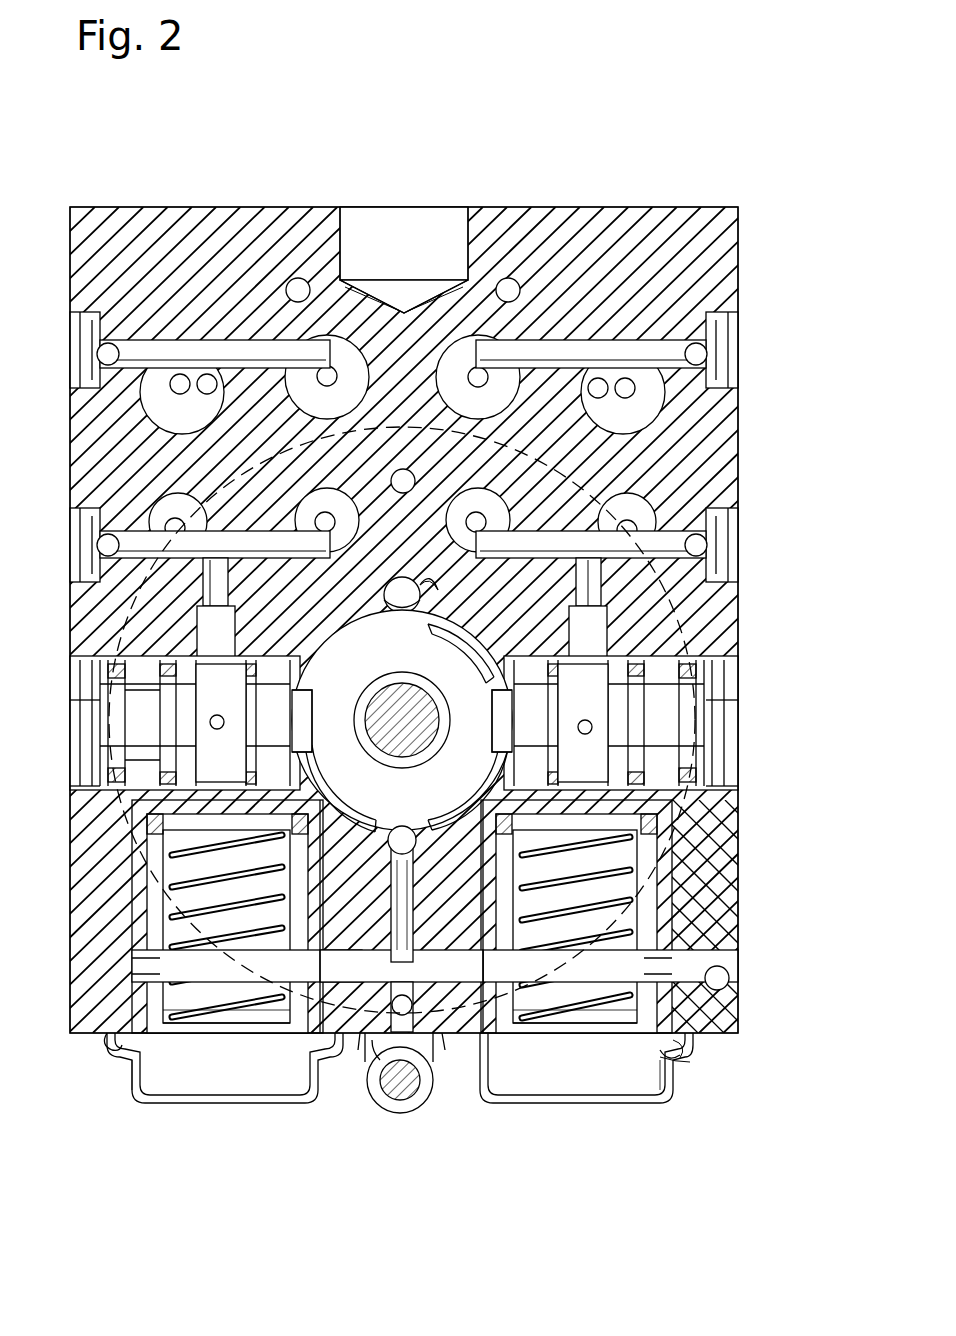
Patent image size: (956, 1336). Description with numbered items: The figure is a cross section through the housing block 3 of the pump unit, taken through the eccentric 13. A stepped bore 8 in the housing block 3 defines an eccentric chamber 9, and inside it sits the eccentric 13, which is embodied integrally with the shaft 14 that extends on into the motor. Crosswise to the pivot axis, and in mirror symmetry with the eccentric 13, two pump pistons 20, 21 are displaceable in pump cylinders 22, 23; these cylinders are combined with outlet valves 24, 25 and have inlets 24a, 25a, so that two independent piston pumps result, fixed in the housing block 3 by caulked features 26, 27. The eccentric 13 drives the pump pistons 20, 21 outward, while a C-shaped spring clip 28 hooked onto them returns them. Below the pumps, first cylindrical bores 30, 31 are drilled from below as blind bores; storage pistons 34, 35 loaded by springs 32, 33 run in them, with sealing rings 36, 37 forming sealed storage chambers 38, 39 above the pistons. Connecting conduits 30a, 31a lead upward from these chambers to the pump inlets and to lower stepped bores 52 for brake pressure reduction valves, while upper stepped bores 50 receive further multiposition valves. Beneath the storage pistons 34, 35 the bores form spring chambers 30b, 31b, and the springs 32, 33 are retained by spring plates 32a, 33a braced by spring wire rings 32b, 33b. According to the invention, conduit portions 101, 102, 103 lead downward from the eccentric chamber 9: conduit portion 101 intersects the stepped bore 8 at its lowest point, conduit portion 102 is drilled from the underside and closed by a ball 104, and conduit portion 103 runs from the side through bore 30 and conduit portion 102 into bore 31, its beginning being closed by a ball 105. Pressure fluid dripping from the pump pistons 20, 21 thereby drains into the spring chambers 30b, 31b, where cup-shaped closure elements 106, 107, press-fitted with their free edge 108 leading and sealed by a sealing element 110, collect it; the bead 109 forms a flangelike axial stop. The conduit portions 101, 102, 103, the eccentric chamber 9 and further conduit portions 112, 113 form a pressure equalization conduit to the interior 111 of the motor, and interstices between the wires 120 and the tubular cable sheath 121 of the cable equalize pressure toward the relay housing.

The housing block 3 is at (712, 272).
The stepped bore 8 is at (315, 637).
The eccentric chamber 9 is at (345, 652).
The eccentric 13 is at (407, 703).
The shaft 14 is at (390, 687).
The pump piston 20 is at (483, 782).
The pump piston 21 is at (322, 766).
The pump cylinder 22 is at (650, 737).
The pump cylinder 23 is at (165, 730).
The outlet valve 24 is at (680, 760).
The inlet 24a is at (690, 705).
The outlet valve 25 is at (112, 752).
The inlet 25a is at (130, 700).
The caulked feature 26 is at (700, 790).
The caulked feature 27 is at (110, 780).
The C-shaped spring clip 28 is at (456, 805).
The first cylindrical bore 30 is at (690, 975).
The connecting conduit 30a is at (680, 830).
The spring chamber 30b is at (665, 950).
The first cylindrical bore 31 is at (135, 965).
The connecting conduit 31a is at (100, 827).
The spring chamber 31b is at (140, 948).
The spring 32 is at (590, 1035).
The spring plate 32a is at (560, 1038).
The spring wire ring 32b is at (670, 1020).
The spring 33 is at (180, 1040).
The spring plate 33a is at (200, 1038).
The spring wire ring 33b is at (120, 1020).
The storage piston 34 is at (690, 900).
The storage piston 35 is at (115, 905).
The sealing ring 36 is at (650, 870).
The sealing ring 37 is at (130, 865).
The storage chamber 38 is at (665, 845).
The storage chamber 39 is at (120, 840).
The upper stepped bore 50 is at (655, 398).
The lower stepped bore 52 is at (630, 510).
The first conduit portion 101 is at (400, 828).
The conduit portion 102 is at (440, 1040).
The conduit portion 103 is at (495, 1050).
The ball 104 is at (368, 1045).
The ball 105 is at (730, 985).
The closure element 106 is at (648, 1130).
The closure element 107 is at (152, 1123).
The free edge 108 is at (700, 1045).
The cover rim 109 is at (690, 1070).
The sealing element 110 is at (662, 1065).
The interior of the motor 111 is at (402, 583).
The conduit portion 112 is at (437, 592).
The conduit portion 113 is at (387, 593).
The wires 120 is at (412, 1100).
The tubular cable sheath 121 is at (392, 1088).